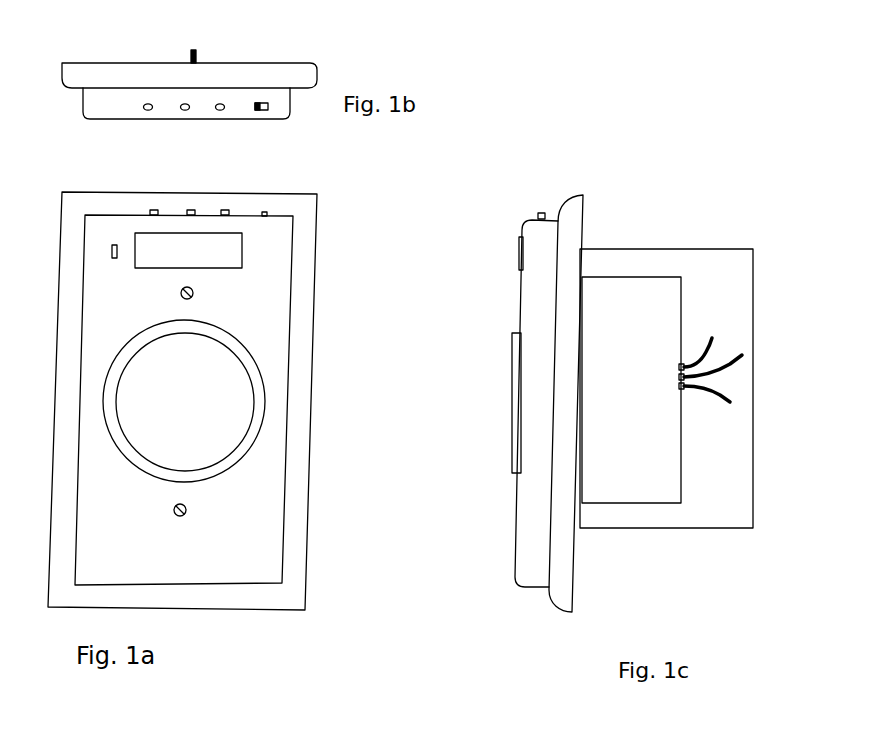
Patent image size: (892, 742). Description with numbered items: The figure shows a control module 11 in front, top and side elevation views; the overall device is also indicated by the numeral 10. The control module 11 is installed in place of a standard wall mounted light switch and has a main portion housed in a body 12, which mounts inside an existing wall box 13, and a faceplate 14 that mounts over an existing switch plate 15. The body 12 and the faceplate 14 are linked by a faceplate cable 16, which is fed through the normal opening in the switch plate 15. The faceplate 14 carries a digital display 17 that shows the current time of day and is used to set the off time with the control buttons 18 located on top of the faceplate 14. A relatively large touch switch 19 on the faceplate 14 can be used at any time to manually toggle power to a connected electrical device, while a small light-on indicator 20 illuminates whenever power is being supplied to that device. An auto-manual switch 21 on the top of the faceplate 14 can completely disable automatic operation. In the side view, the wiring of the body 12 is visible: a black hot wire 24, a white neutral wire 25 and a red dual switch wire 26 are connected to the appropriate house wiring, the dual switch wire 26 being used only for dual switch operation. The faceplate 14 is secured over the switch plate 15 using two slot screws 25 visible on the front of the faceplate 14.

In FIG. 1A, the timer device 10 is at (230, 386).
In FIG. 1B, the control module 11 is at (222, 92).
In FIG. 1A, the control module 11 is at (213, 386).
In FIG. 1C, the control module 11 is at (606, 428).
In FIG. 1C, the body 12 is at (645, 277).
In FIG. 1C, the wall box 13 is at (647, 529).
In FIG. 1B, the faceplate 14 is at (186, 103).
In FIG. 1A, the faceplate 14 is at (261, 575).
In FIG. 1C, the faceplate 14 is at (527, 578).
In FIG. 1B, the switch plate 15 is at (298, 74).
In FIG. 1A, the switch plate 15 is at (306, 340).
In FIG. 1C, the switch plate 15 is at (572, 208).
In FIG. 1B, the faceplate cable 16 is at (198, 56).
In FIG. 1A, the digital display 17 is at (238, 264).
In FIG. 1C, the digital display 17 is at (519, 253).
In FIG. 1B, the control buttons 18 is at (142, 113).
In FIG. 1A, the control buttons 18 is at (232, 204).
In FIG. 1A, the touch switch 19 is at (149, 430).
In FIG. 1C, the touch switch 19 is at (516, 416).
In FIG. 1A, the light-on indicator 20 is at (113, 258).
In FIG. 1B, the auto-manual switch 21 is at (268, 108).
In FIG. 1A, the auto-manual switch 21 is at (265, 214).
In FIG. 1C, the auto-manual switch 21 is at (540, 213).
In FIG. 1C, the hot wire 24 is at (706, 350).
In FIG. 1A, the neutral wire 25 is at (194, 293).
In FIG. 1C, the neutral wire 25 is at (731, 363).
In FIG. 1C, the dual switch wire 26 is at (713, 398).